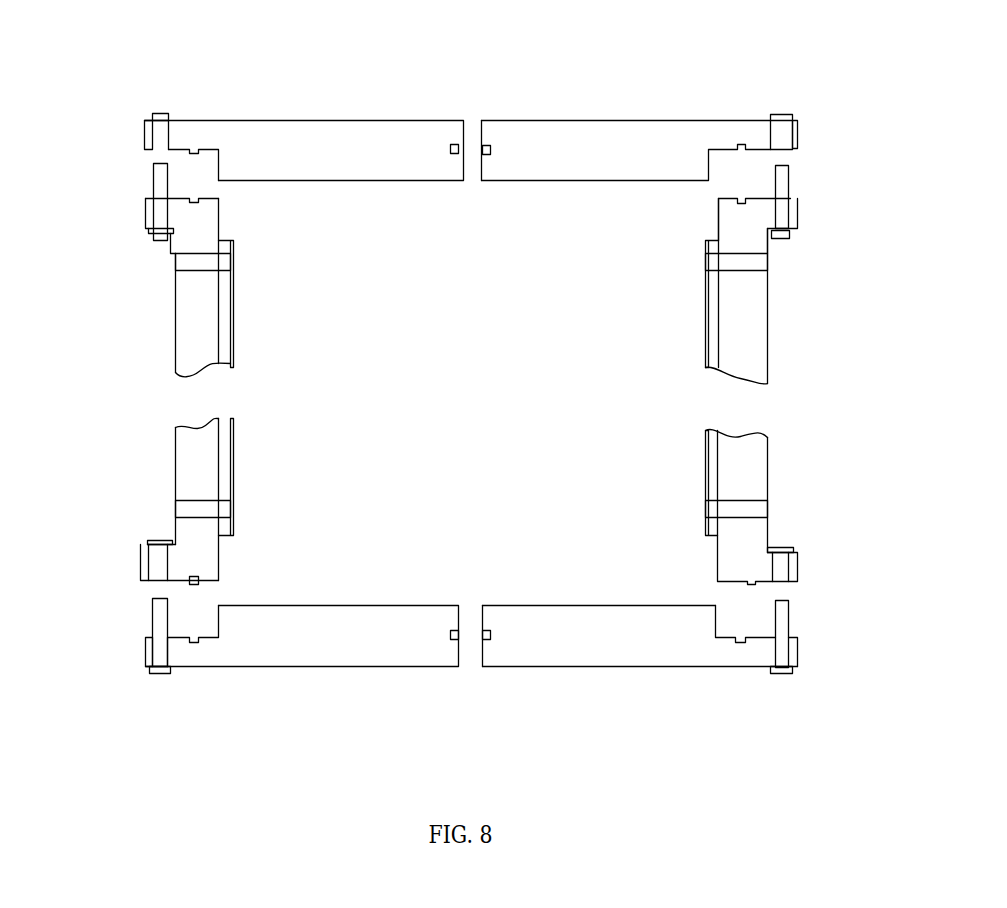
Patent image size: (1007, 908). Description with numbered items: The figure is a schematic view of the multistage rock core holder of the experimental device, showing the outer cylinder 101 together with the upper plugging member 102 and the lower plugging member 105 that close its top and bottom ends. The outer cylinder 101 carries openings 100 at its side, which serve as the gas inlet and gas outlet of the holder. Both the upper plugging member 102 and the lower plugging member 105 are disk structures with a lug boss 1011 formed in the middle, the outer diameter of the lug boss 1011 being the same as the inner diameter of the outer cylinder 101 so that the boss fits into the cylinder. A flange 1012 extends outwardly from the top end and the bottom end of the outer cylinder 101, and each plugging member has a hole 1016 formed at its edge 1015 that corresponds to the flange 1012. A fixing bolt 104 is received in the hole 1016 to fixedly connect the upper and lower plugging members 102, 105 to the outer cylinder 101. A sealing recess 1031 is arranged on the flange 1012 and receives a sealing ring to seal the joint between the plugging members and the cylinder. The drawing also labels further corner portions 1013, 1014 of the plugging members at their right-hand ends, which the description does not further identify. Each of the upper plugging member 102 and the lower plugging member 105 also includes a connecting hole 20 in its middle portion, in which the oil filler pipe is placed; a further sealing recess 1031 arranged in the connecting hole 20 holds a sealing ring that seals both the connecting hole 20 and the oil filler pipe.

The opening 100 is at (216, 509).
The outer cylinder 101 is at (105, 265).
The lug boss 1011 is at (265, 63).
The flange 1012 is at (108, 168).
The right upper corner connecting piece 1013 is at (733, 213).
The right lower corner connecting piece 1014 is at (868, 668).
The edge 1015 is at (738, 137).
The hole 1016 is at (780, 134).
The upper plugging member 102 is at (390, 137).
The sealing recess 1031 is at (548, 710).
The fixing bolt 104 is at (815, 308).
The lower plugging member 105 is at (360, 733).
The connecting hole 20 is at (450, 37).